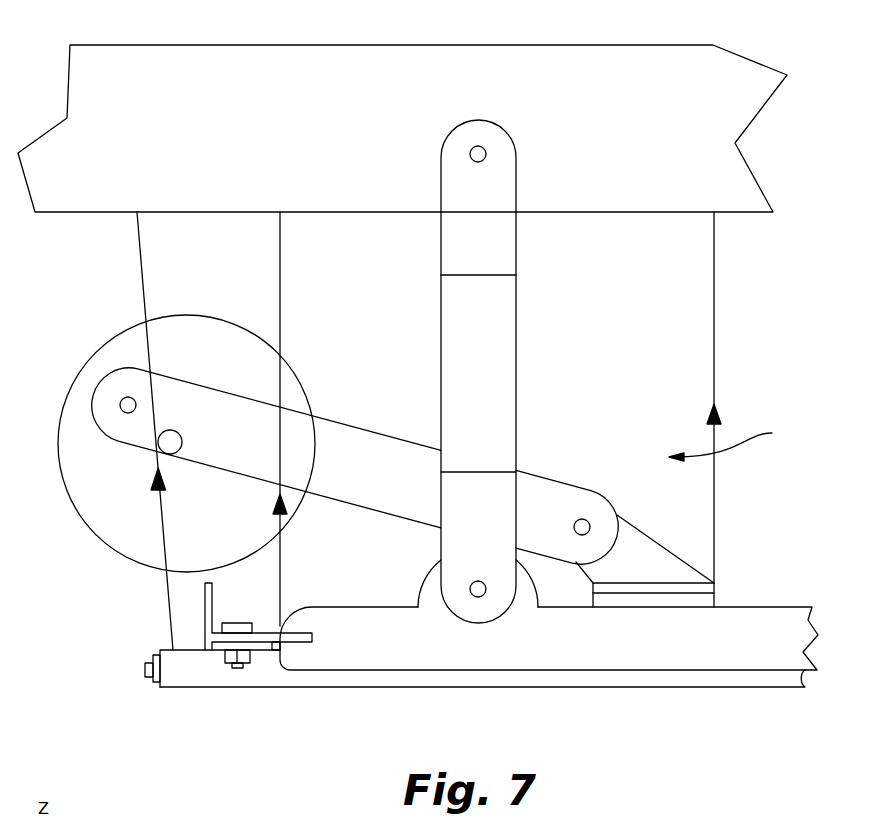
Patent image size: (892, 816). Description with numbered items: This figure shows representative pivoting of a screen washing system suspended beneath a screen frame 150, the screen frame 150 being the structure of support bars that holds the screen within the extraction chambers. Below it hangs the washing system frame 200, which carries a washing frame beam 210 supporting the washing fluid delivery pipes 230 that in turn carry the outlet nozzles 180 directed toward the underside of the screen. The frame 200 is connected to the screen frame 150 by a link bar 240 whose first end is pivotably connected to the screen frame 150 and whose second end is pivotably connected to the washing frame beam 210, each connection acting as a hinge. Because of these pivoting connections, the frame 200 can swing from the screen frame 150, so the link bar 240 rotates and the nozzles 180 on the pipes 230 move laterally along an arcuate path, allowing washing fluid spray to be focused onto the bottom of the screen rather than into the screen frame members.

The screen frame 150 is at (373, 58).
The link bar 240 is at (497, 353).
The frame 200 is at (740, 409).
The washing fluid delivery pipes 230 is at (373, 680).
The washing frame beam 210 is at (693, 653).
The outlet nozzles 180 is at (167, 650).